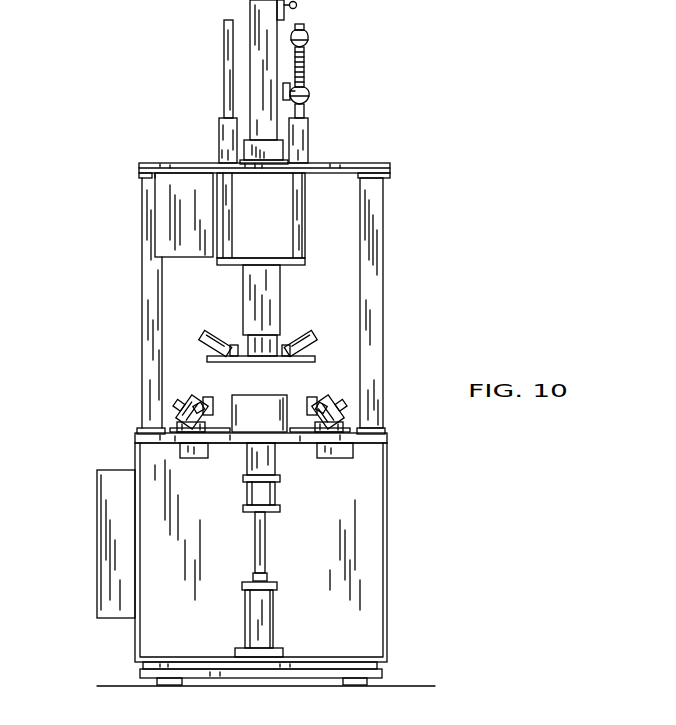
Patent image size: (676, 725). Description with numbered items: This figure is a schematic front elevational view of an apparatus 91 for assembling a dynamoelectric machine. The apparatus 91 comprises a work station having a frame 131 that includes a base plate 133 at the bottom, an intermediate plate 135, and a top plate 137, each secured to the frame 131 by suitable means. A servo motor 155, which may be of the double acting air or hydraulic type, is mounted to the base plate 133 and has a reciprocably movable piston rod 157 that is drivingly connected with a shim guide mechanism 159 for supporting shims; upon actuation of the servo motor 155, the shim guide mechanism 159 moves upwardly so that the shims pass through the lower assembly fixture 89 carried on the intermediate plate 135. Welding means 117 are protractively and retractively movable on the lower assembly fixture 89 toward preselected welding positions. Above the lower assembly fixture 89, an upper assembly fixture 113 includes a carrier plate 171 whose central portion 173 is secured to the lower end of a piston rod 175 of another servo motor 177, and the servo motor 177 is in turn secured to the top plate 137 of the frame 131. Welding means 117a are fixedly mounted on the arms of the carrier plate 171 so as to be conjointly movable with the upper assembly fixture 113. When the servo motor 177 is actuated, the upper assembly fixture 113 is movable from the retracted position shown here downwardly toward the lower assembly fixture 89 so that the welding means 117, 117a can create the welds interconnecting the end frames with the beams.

The apparatus 91 is at (437, 170).
The servo motor 177 is at (257, 78).
The top plate 137 is at (359, 163).
The frame 131 is at (125, 357).
The upper assembly fixture 113 is at (288, 316).
The piston rod 175 is at (254, 282).
The central portion 173 is at (255, 340).
The welding means 117a is at (327, 337).
The carrier plate 171 is at (315, 359).
The lower assembly fixture 89 is at (244, 392).
The welding means 117 is at (178, 402).
The intermediate plate 135 is at (385, 447).
The shim guide mechanism 159 is at (278, 464).
The piston rod 157 is at (265, 545).
The servo motor 155 is at (268, 622).
The base plate 133 is at (352, 657).